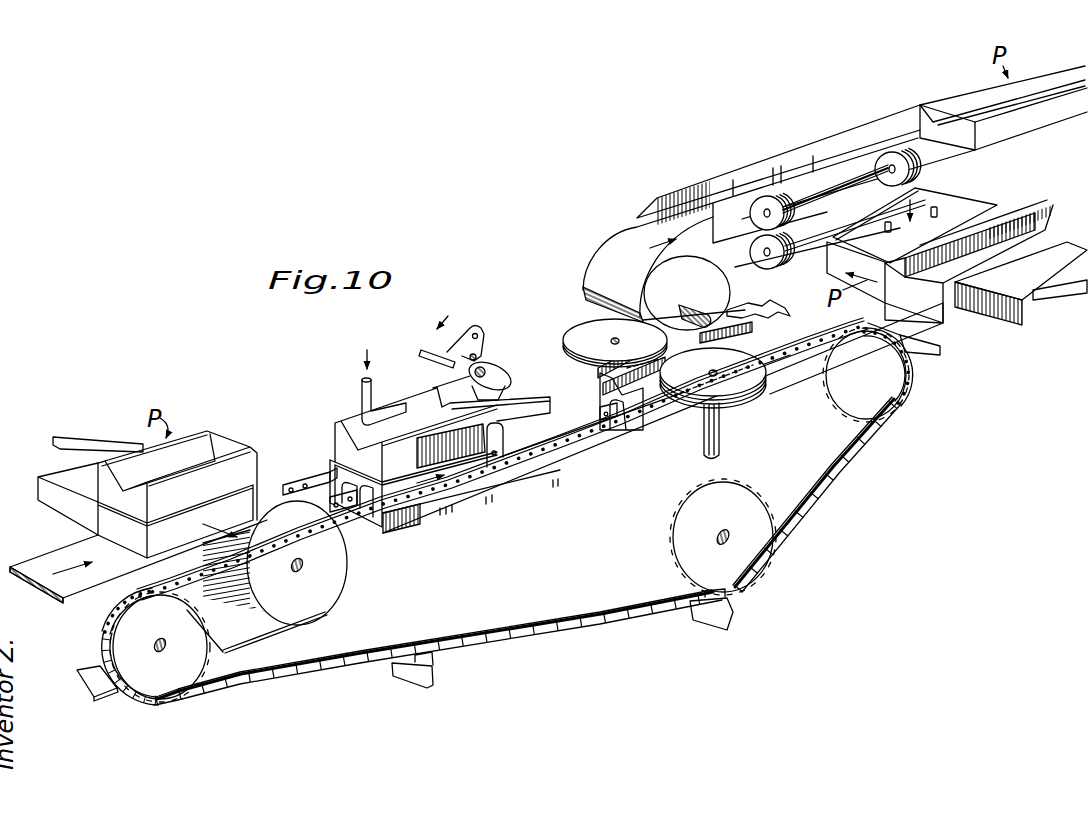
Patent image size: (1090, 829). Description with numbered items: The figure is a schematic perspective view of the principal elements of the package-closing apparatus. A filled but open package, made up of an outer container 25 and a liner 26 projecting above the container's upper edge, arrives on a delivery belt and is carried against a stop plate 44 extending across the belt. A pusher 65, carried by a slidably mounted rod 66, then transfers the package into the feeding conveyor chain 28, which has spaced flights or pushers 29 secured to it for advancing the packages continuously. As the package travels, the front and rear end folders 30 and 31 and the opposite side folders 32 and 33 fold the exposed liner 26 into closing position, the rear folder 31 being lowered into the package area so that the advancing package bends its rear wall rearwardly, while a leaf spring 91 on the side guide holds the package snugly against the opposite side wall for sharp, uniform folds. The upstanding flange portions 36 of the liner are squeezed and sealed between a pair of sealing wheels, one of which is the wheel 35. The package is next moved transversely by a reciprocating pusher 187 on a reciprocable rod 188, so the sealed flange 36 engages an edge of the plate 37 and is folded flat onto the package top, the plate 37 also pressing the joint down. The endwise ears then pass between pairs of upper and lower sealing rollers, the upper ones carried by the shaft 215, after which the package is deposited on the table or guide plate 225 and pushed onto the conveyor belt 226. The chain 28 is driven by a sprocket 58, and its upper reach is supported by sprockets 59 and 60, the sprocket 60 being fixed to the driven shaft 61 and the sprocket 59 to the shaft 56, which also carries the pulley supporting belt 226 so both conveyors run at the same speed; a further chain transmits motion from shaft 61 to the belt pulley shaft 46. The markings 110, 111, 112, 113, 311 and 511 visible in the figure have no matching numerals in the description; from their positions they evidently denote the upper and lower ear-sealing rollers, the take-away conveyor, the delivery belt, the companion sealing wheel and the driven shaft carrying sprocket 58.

The outer container 25 is at (108, 530).
The liner 26 is at (60, 470).
The feeding conveyor chain 28 is at (260, 682).
The flights or pushers 29 is at (368, 515).
The front end folder 30 is at (501, 363).
The rear end folder 31 is at (355, 392).
The side folder 32 is at (548, 398).
The side folder 33 is at (458, 384).
The sealing wheel 35 is at (733, 397).
The flange-like portions 36 is at (1036, 223).
The plate 37 is at (950, 218).
The stop plate 44 is at (279, 481).
The belt pulley shaft 46 is at (299, 571).
The shaft 56 is at (870, 382).
The sprocket 58 is at (672, 522).
The sprocket 59 is at (842, 406).
The sprocket 60 is at (203, 657).
The driven shaft 61 is at (165, 655).
The pusher 65 is at (52, 500).
The rod 66 is at (73, 452).
The leaf spring 91 is at (327, 468).
The rollers 110 is at (786, 227).
The lower roller 111 is at (760, 260).
The curved chute 112 is at (608, 246).
The feed plate 113 is at (66, 597).
The transversely reciprocating pusher 187 is at (1008, 314).
The transversely reciprocable rod 188 is at (1067, 294).
The shaft 215 is at (853, 182).
The table or guide plate 225 is at (813, 266).
The conveyor belt 226 is at (910, 137).
The upper disc 311 is at (577, 327).
The shaft 511 is at (730, 532).